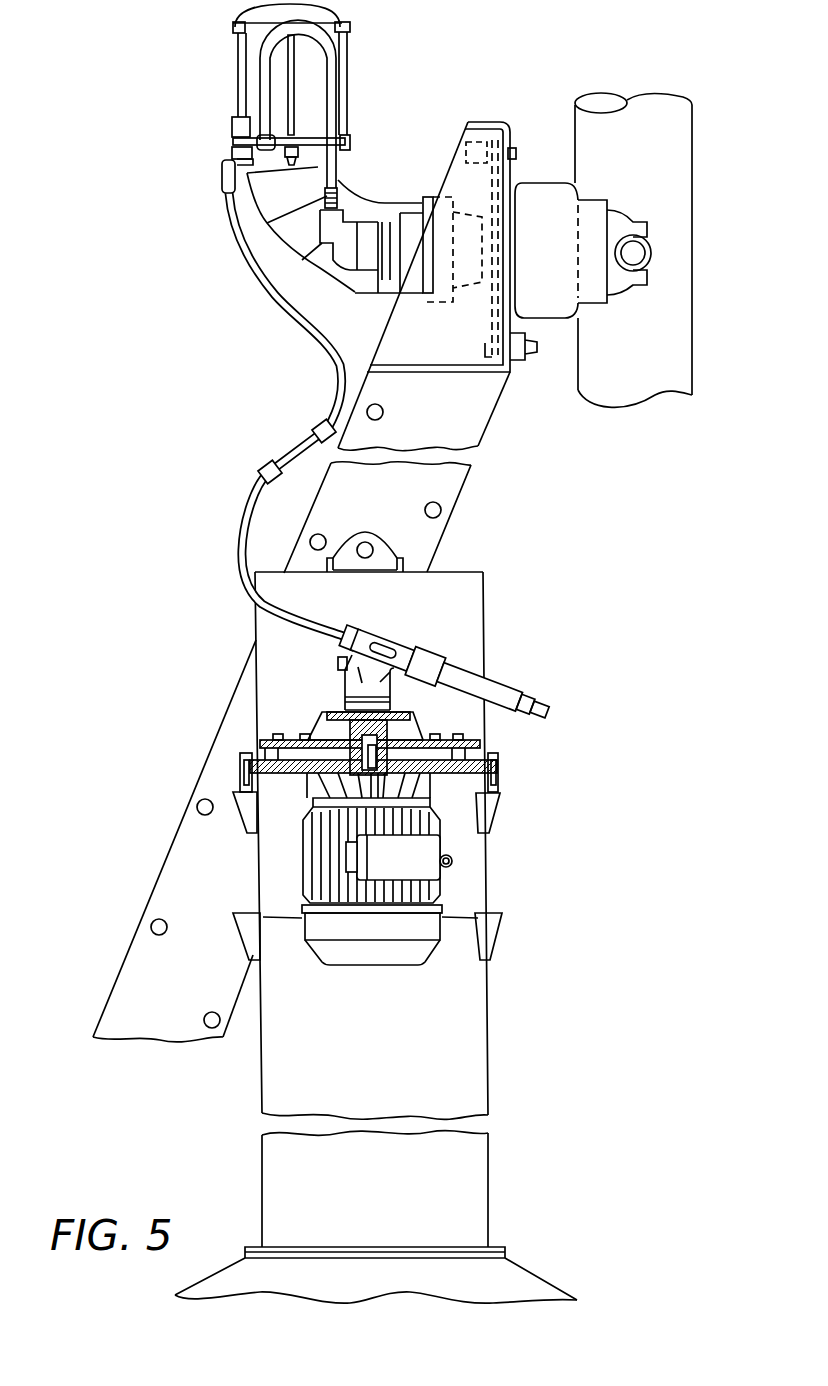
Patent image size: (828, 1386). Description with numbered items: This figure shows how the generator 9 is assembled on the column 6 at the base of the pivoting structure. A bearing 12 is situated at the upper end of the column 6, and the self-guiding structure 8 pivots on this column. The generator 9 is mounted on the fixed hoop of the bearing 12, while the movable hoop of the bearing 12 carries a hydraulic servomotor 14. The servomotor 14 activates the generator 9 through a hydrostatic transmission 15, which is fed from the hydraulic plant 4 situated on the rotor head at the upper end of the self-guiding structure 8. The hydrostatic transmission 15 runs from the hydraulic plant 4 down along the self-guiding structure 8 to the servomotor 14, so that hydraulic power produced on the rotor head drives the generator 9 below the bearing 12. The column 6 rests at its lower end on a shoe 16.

The hydraulic plant 4 is at (293, 238).
The column 6 is at (470, 895).
The self-guiding structure 8 is at (470, 400).
The generator 9 is at (413, 852).
The bearing 12 is at (260, 743).
The hydraulic servomotor 14 is at (453, 680).
The hydrostatic transmission 15 is at (238, 582).
The shoe 16 is at (503, 1278).